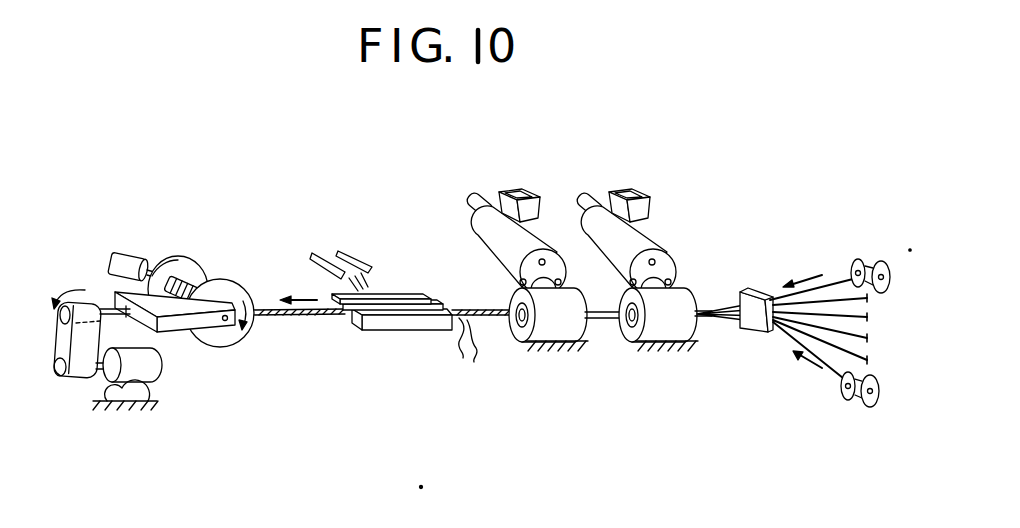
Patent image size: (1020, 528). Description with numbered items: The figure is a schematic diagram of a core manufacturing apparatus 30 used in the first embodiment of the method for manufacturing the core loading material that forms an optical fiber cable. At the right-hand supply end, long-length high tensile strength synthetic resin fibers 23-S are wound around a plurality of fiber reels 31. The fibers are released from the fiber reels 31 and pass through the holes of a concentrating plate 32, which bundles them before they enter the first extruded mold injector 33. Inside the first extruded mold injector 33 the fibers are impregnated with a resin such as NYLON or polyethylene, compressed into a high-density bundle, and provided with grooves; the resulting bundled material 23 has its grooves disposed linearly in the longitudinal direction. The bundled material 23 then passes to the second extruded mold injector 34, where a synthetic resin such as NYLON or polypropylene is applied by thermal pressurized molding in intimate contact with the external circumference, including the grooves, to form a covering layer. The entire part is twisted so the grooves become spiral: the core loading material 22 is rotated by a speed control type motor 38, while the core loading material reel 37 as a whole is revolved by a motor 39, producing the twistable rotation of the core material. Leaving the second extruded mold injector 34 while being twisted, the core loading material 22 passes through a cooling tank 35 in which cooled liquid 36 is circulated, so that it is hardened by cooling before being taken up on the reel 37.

The core manufacturing apparatus 30 is at (417, 183).
The core loading material 22 is at (313, 320).
The bundled material 23 is at (603, 321).
The synthetic resin fibers 23-S is at (839, 374).
The fiber reels 31 is at (866, 260).
The concentrating plate 32 is at (757, 292).
The first extruded mold injector 33 is at (685, 287).
The second extruded mold injector 34 is at (547, 250).
The cooling tank 35 is at (413, 292).
The cooled liquid 36 is at (330, 252).
The core loading material reel 37 is at (200, 268).
The speed control type motor 38 is at (134, 260).
The motor 39 is at (150, 372).